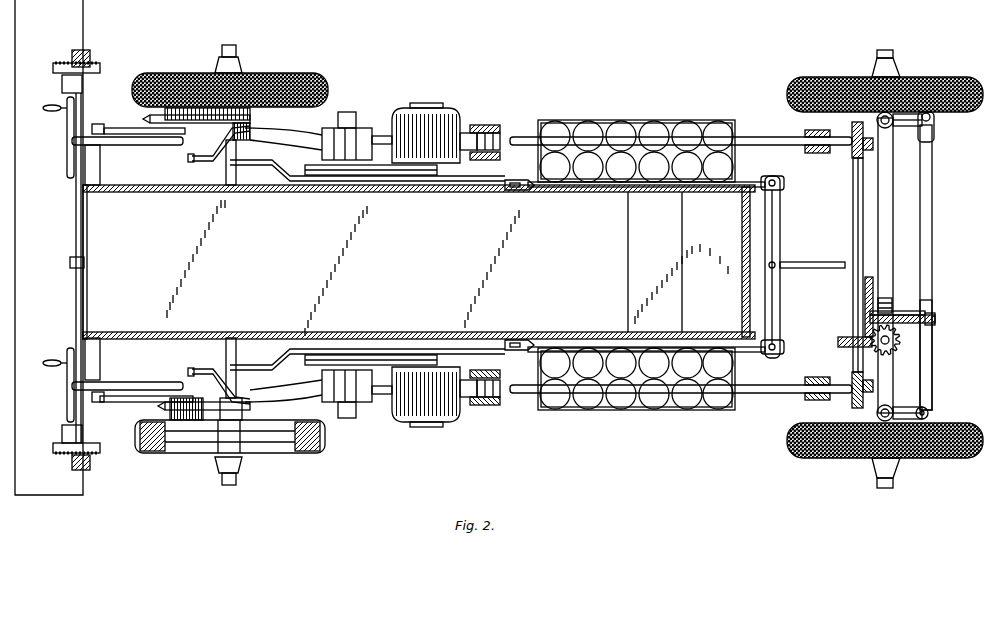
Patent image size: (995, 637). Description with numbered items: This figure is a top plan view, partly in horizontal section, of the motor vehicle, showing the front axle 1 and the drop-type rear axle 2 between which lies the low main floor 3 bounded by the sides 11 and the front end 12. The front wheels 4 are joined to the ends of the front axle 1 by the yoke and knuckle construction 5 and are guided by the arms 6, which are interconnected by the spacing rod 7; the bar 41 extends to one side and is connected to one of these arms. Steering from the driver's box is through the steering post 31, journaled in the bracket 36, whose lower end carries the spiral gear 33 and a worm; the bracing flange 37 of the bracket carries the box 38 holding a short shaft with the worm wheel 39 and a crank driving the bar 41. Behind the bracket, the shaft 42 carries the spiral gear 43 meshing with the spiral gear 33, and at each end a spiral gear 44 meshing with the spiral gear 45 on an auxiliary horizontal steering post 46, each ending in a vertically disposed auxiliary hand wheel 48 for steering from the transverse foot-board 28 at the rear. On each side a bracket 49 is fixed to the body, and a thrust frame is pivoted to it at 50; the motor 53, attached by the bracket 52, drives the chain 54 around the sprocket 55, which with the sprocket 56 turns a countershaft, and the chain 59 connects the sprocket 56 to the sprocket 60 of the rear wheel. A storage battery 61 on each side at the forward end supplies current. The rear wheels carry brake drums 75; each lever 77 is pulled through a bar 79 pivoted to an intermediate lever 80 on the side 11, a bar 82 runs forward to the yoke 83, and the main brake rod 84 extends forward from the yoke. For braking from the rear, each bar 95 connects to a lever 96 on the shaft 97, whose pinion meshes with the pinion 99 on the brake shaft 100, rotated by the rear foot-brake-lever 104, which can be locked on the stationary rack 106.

The front axle 1 is at (890, 200).
The rear axle 2 is at (230, 192).
The main floor 3 is at (447, 268).
The front wheels 4 is at (918, 80).
The yoke and knuckle construction 5 is at (885, 128).
The arms 6 is at (905, 126).
The spacing rod 7 is at (932, 378).
The sides 11 is at (472, 192).
The front end 12 is at (742, 288).
The foot-board 28 is at (49, 247).
The steering post 31 is at (900, 340).
The spiral gear 33 is at (889, 348).
The bracket 36 is at (865, 290).
The bracing flange 37 is at (902, 311).
The box 38 is at (925, 313).
The worm wheel 39 is at (888, 298).
The bar 41 is at (932, 228).
The shaft 42 is at (853, 240).
The spiral gear 43 is at (838, 342).
The spiral gear 44 is at (852, 130).
The spiral gear 45 is at (865, 150).
The auxiliary horizontal steering post 46 is at (140, 145).
The auxiliary hand wheels 48 is at (66, 155).
The bracket 49 is at (486, 125).
The pivotal connection 50 is at (488, 152).
The bracket 52 is at (382, 136).
The motor 53 is at (426, 265).
The chain 54 is at (400, 176).
The sprocket 55 is at (286, 265).
The sprocket 56 is at (362, 128).
The chain 59 is at (300, 130).
The sprocket 60 is at (160, 119).
The storage battery 61 is at (625, 124).
The brake drums 75 is at (208, 82).
The lever 77 is at (192, 157).
The bar 79 is at (260, 165).
The intermediate lever 80 is at (512, 192).
The bar 82 is at (602, 188).
The yoke 83 is at (780, 240).
The main brake rod 84 is at (805, 268).
The bar 95 is at (165, 134).
The lever 96 is at (100, 124).
The shaft 97 is at (100, 360).
The pinion 99 is at (72, 268).
The brake shaft 100 is at (75, 305).
The rear foot-brake-lever 104 is at (72, 56).
The stationary rack 106 is at (58, 68).